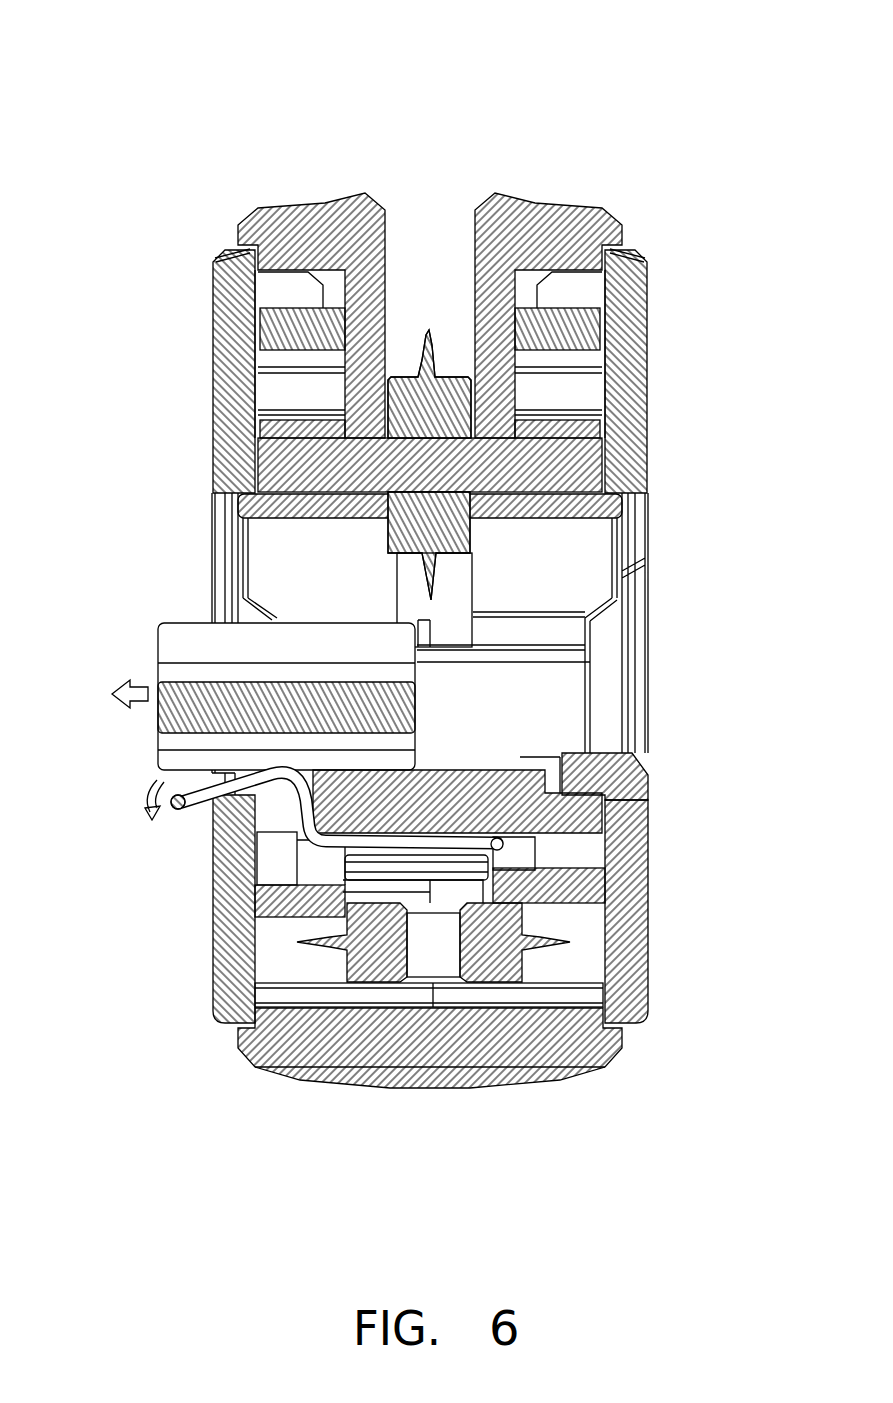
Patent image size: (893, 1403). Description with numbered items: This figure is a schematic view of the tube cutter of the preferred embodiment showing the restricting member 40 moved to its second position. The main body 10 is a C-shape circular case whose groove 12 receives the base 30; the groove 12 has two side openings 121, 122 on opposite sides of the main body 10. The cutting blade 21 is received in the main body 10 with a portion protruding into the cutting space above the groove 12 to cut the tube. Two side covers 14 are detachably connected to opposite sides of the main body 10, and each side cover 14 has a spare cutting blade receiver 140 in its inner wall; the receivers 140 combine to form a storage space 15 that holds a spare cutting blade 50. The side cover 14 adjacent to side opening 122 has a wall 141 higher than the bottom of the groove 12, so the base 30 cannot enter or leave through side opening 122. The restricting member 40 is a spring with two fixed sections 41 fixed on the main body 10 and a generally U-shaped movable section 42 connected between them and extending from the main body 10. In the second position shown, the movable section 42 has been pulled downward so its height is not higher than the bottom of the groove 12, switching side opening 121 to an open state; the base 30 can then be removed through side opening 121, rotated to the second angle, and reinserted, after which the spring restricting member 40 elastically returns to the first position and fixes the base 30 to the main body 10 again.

The main body 10 is at (260, 137).
The cutting blade 21 is at (427, 330).
The side opening 121 is at (253, 615).
The side opening 122 is at (593, 618).
The base 30 is at (158, 652).
The groove 12 is at (477, 768).
The wall 141 is at (577, 757).
The spare cutting blade receiver 140 is at (545, 882).
The side cover 14 is at (225, 945).
The storage space 15 is at (565, 963).
The spare cutting blade 50 is at (375, 957).
The fixed section 41 is at (462, 843).
The restricting member 40 is at (172, 820).
The movable section 42 is at (176, 794).